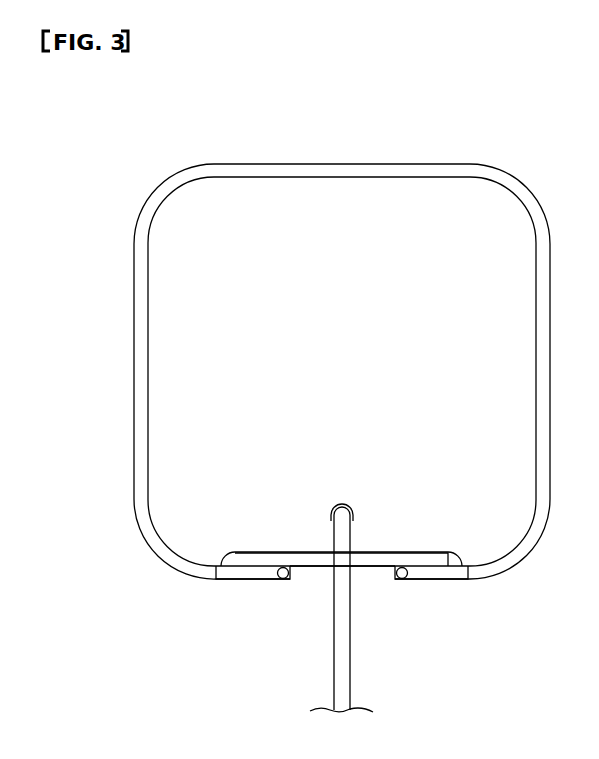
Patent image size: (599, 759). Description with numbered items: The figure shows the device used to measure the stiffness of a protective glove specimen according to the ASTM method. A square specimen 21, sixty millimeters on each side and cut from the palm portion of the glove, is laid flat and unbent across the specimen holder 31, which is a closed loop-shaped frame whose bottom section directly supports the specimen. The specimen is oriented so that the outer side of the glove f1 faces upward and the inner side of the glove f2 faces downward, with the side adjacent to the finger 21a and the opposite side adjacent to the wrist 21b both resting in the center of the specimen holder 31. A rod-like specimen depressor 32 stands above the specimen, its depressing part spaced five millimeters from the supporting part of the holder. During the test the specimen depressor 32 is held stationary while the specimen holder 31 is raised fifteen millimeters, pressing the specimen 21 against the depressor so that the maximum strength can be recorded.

The specimen holder 31 is at (350, 170).
The specimen of protective glove 21 is at (302, 545).
The side adjacent to the finger of the glove 21a is at (222, 579).
The side adjacent to the wrist of the glove 21b is at (470, 580).
The outer side of the glove f1 is at (380, 555).
The inner side of the glove f2 is at (372, 579).
The specimen depressor 32 is at (345, 680).